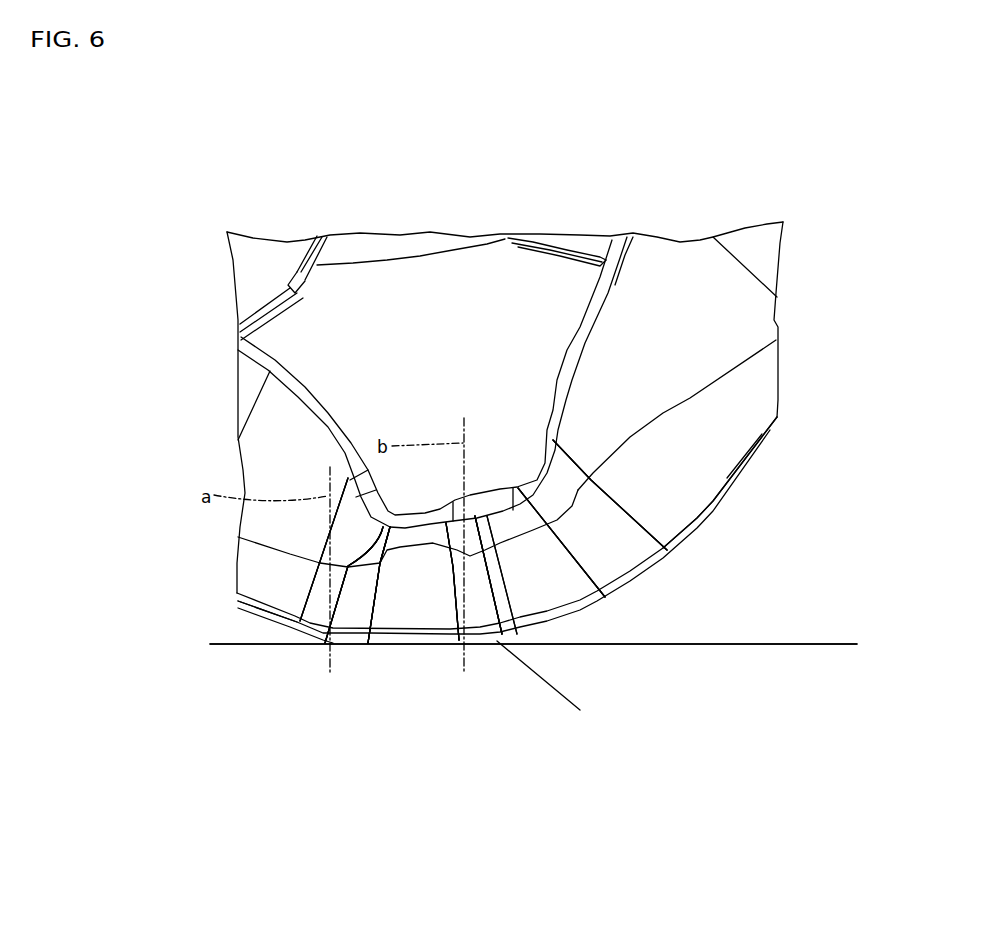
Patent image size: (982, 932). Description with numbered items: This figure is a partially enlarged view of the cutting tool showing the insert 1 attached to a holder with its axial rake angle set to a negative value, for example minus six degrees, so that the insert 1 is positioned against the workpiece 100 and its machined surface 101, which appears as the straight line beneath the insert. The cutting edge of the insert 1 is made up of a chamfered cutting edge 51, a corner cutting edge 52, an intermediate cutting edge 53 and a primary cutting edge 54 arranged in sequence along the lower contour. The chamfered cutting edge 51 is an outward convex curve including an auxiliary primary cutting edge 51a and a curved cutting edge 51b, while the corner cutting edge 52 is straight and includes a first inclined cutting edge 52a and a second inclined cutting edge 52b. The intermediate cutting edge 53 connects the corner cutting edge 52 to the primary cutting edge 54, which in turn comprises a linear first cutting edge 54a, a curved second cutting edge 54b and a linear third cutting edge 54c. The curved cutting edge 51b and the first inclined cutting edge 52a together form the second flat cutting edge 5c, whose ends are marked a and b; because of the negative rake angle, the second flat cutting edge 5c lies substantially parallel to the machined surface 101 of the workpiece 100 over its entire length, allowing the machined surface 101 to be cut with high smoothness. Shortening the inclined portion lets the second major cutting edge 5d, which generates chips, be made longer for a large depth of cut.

The insert 1 is at (801, 301).
The second flat cutting edge 5c is at (457, 778).
The second major cutting edge 5d is at (595, 634).
The chamfered cutting edge 51 is at (375, 767).
The auxiliary primary cutting edge 51a is at (305, 622).
The curved cutting edge 51b is at (343, 632).
The corner cutting edge 52 is at (410, 765).
The first inclined cutting edge 52a is at (417, 632).
The second inclined cutting edge 52b is at (472, 632).
The intermediate cutting edge 53 is at (497, 645).
The primary cutting edge 54 is at (760, 765).
The first cutting edge 54a is at (558, 620).
The second cutting edge 54b is at (640, 580).
The third cutting edge 54c is at (708, 512).
The workpiece 100 is at (823, 644).
The machined surface 101 is at (823, 644).